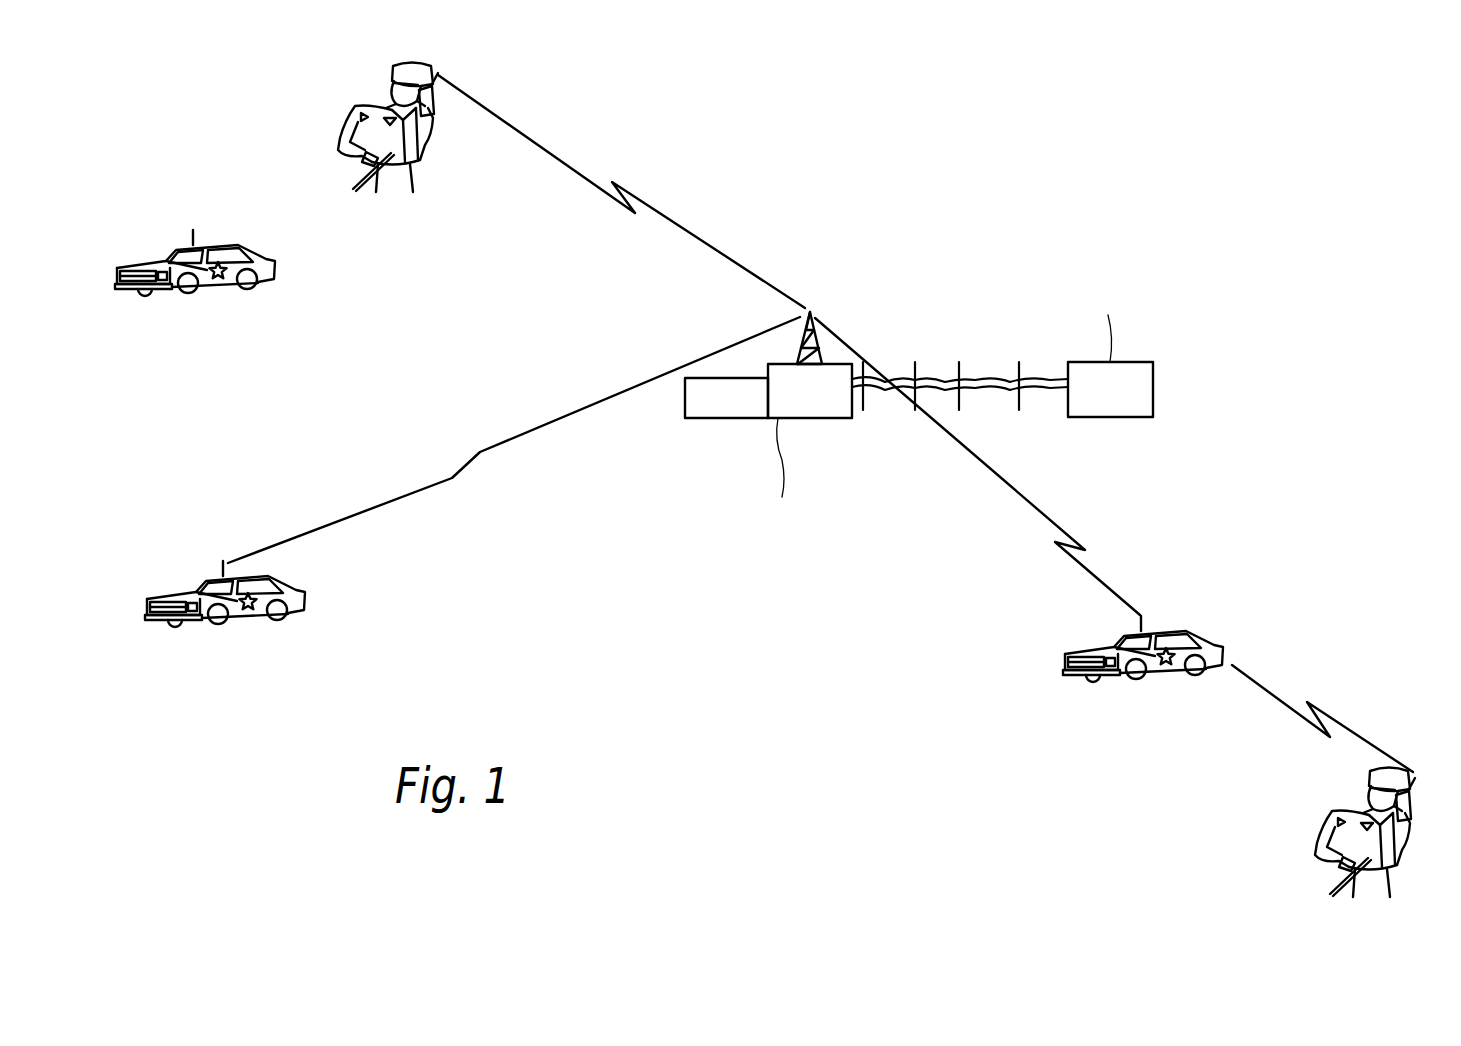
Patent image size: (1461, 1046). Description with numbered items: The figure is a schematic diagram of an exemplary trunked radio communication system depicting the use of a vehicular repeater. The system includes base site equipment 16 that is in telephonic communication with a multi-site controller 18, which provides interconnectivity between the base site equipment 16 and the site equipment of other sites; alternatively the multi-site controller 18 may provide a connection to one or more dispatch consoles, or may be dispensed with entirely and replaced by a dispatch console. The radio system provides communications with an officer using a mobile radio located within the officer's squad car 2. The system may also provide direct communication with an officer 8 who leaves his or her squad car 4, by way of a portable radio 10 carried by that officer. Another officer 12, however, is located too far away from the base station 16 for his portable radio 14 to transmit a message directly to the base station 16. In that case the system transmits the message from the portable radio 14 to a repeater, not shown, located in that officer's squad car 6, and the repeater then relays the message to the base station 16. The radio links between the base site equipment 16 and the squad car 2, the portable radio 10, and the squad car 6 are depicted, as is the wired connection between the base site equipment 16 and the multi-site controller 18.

The squad car 2 is at (248, 615).
The squad car 4 is at (215, 285).
The squad car 6 is at (1167, 673).
The officer 8 is at (355, 110).
The portable radio 10 is at (428, 116).
The officer 12 is at (1326, 818).
The portable radio 14 is at (1414, 788).
The base site equipment 16 is at (810, 418).
The multi-site controller 18 is at (1122, 418).